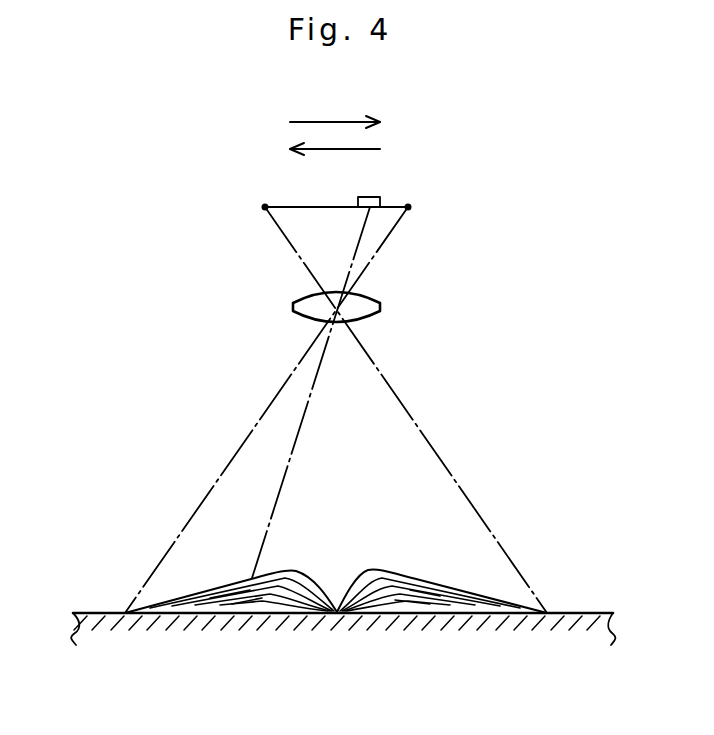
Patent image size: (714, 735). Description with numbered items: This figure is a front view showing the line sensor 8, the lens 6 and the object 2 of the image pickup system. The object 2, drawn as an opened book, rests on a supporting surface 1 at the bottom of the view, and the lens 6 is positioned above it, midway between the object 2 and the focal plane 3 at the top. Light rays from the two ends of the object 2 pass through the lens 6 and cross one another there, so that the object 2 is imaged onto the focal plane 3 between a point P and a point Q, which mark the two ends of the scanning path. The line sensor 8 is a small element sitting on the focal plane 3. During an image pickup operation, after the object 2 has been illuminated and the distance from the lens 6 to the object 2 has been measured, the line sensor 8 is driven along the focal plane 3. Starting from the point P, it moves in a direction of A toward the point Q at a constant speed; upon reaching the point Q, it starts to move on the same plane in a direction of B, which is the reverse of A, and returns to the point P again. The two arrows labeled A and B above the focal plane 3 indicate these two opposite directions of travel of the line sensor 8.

The document table / platen surface 1 is at (423, 615).
The object 2 is at (421, 580).
The focal plane 3 is at (300, 207).
The lens 6 is at (381, 308).
The line sensor 8 is at (372, 197).
The point P is at (265, 207).
The point Q is at (408, 207).
The direction A is at (335, 110).
The direction B is at (335, 139).